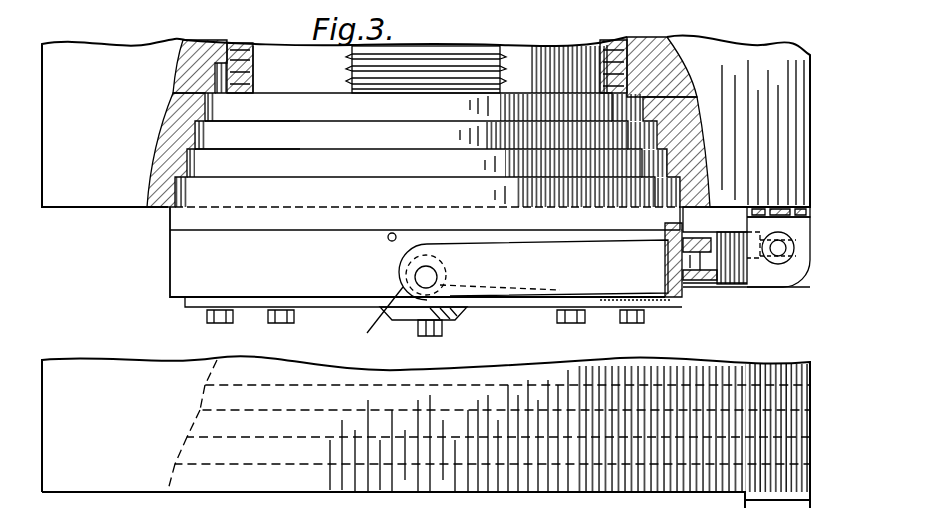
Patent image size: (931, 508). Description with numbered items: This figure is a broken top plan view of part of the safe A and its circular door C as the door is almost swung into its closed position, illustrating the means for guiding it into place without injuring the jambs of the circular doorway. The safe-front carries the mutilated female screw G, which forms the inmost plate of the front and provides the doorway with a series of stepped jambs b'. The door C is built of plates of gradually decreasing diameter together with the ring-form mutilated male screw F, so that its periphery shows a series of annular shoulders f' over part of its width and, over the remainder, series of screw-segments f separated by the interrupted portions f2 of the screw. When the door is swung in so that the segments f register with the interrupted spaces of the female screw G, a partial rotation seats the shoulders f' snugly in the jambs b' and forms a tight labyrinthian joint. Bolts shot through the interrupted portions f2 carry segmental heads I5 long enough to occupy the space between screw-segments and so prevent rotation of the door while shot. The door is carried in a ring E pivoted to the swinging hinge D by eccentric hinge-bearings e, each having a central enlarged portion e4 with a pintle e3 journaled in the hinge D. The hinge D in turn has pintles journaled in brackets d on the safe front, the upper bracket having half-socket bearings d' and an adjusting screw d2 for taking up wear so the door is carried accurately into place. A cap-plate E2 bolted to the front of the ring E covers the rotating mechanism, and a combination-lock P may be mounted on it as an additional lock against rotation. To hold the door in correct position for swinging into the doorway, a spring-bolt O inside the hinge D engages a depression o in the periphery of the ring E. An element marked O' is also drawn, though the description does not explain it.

The safe A is at (426, 271).
The mutilated female screw G is at (436, 57).
The circular aperture or doorway B is at (148, 180).
The stepped jambs b' is at (422, 87).
The circular door C is at (427, 150).
The screw-segments f is at (427, 109).
The mutilated male screw F is at (416, 54).
The segmental bolt-heads I5 is at (540, 38).
The interrupted portions f2 is at (284, 88).
The annular shoulders f' is at (260, 152).
The ring E is at (425, 252).
The cap-plate E2 is at (318, 313).
The hinge D is at (547, 268).
The pintle e3 is at (440, 278).
The central enlarged portion e4 is at (402, 260).
The hinge-bearing e is at (377, 317).
The combination-lock P is at (400, 312).
The spring-bolt O is at (737, 277).
The housing box O' is at (715, 229).
The depression o is at (663, 300).
The brackets d is at (778, 252).
The half-socket bearings d' is at (776, 271).
The screw d2 is at (734, 288).